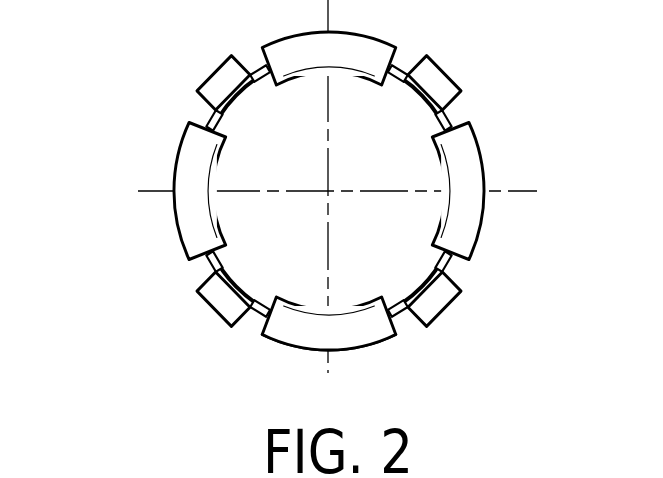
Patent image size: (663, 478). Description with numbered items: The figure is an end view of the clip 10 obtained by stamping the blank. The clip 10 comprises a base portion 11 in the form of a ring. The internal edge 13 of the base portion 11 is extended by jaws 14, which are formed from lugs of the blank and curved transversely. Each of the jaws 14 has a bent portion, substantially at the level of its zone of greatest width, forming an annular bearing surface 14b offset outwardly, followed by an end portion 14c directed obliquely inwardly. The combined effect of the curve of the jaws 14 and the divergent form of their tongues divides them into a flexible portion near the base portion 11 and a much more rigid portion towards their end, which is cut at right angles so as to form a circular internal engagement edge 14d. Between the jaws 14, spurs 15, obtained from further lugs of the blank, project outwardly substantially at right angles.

The clip 10 is at (142, 220).
The base portion 11 is at (204, 125).
The internal edge 13 is at (456, 268).
The jaws 14 is at (479, 200).
The annular bearing surface 14b is at (384, 343).
The end portion 14c is at (301, 330).
The circular internal engagement edge 14d is at (357, 305).
The spurs 15 is at (442, 82).